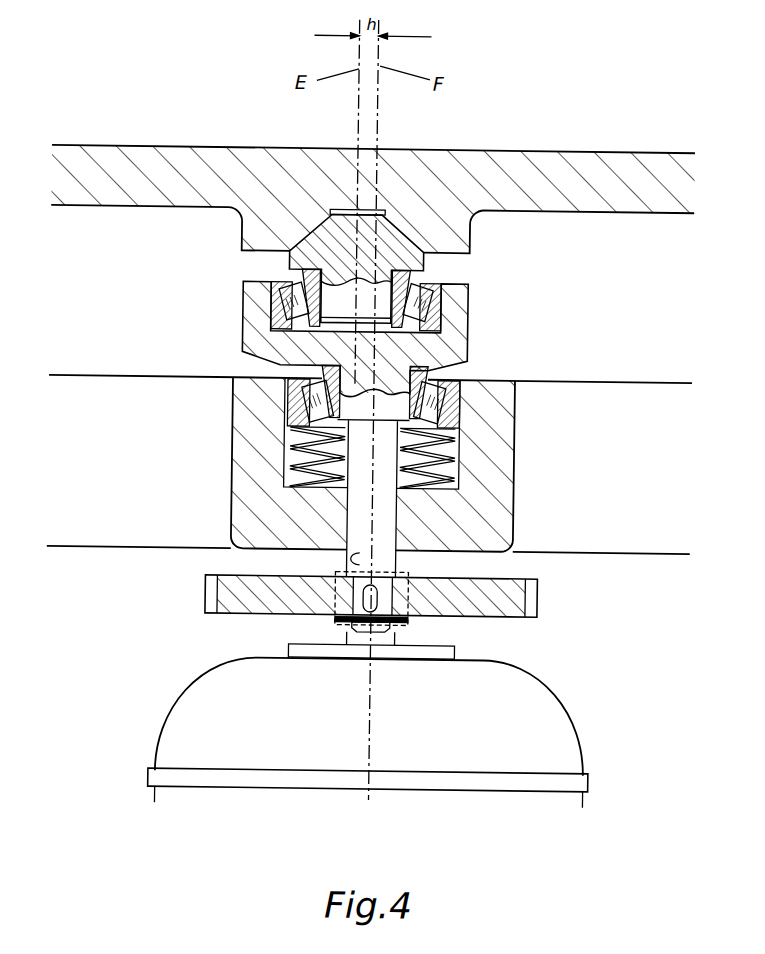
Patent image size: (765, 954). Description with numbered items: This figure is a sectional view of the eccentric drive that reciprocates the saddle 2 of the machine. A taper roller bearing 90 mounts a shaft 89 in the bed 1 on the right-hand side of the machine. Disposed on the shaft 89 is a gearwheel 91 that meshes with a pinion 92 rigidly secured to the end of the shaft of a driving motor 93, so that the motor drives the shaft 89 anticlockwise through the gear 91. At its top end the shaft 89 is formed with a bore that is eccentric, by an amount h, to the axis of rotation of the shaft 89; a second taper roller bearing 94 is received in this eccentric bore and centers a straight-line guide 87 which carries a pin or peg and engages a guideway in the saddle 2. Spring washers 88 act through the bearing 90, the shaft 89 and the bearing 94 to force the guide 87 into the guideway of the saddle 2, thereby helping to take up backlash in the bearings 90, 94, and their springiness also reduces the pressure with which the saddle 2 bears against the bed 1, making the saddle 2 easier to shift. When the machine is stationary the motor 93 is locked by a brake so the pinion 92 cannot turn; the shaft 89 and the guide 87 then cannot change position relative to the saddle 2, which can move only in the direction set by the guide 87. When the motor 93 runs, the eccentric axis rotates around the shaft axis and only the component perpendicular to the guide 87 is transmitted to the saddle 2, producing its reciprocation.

The bed 1 is at (233, 442).
The saddle 2 is at (238, 237).
The straight-line guide 87 is at (426, 262).
The spring washers 88 is at (458, 476).
The shaft 89 is at (500, 591).
The taper roller bearing 90 is at (430, 401).
The gearwheel 91 is at (541, 612).
The pinion 92 is at (340, 618).
The driving motor 93 is at (163, 735).
The taper roller bearing 94 is at (439, 312).